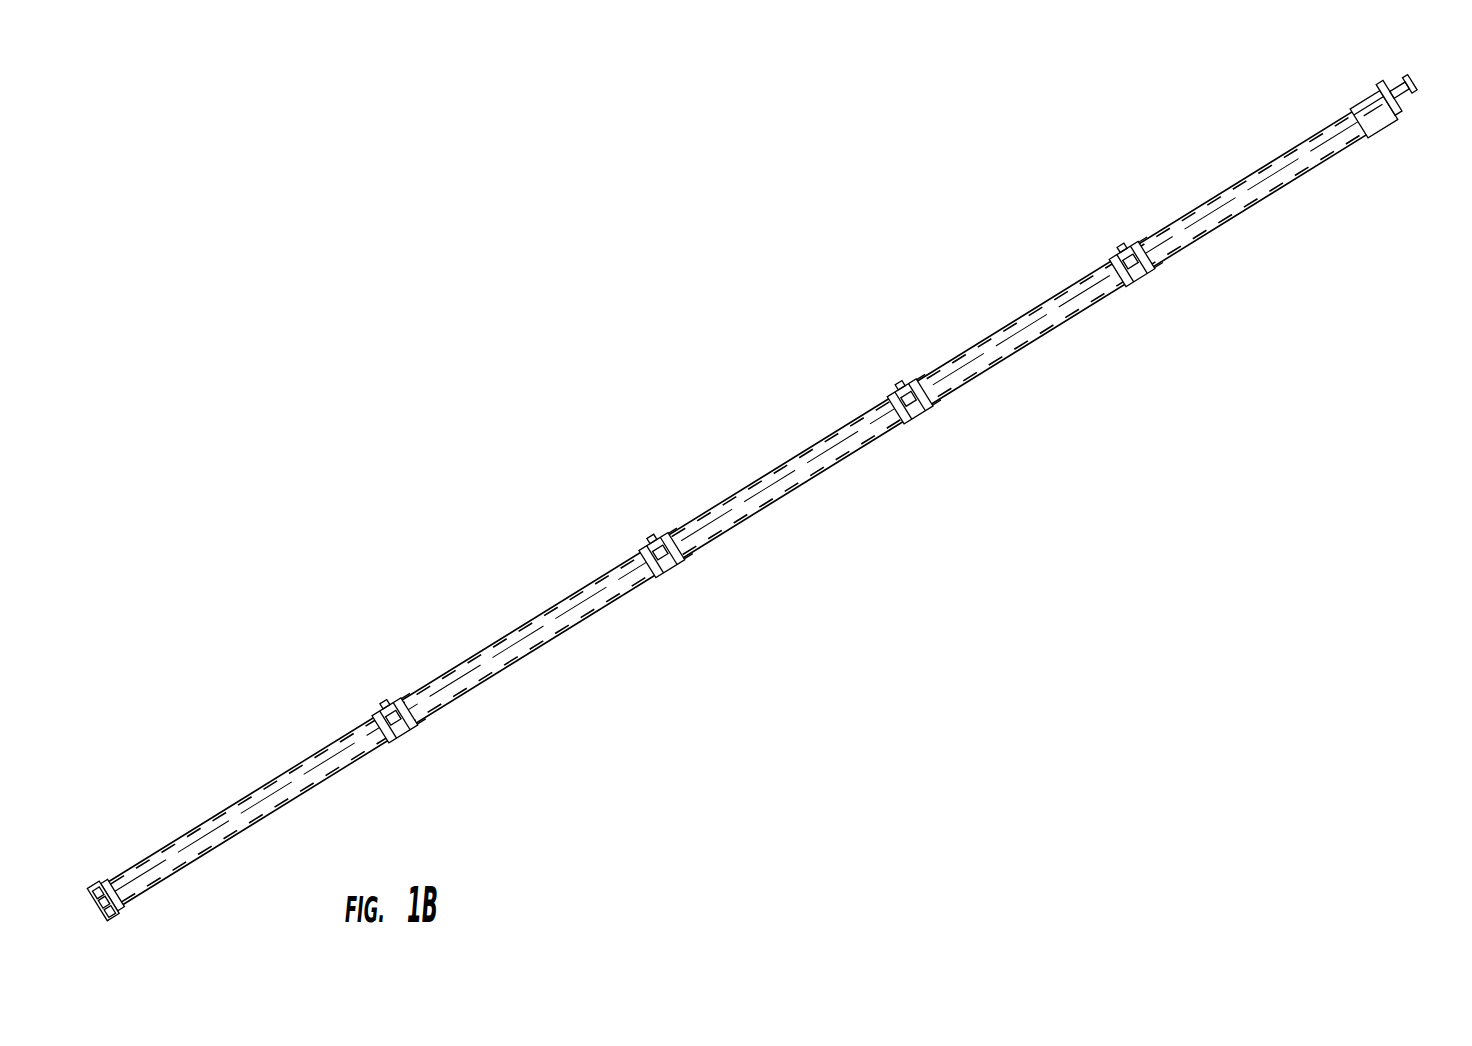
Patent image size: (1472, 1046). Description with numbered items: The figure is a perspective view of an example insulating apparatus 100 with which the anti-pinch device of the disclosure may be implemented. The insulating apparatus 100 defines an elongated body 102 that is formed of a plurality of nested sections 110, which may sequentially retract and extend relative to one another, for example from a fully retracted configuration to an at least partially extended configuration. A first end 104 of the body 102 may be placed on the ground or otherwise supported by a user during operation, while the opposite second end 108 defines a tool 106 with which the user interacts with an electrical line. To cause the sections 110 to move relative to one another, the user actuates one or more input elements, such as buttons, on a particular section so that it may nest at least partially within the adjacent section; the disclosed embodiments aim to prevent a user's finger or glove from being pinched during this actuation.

The insulating apparatus 100 is at (670, 272).
The body 102 is at (830, 594).
The first end 104 is at (96, 884).
The tool 106 is at (1418, 94).
The second end 108 is at (1350, 104).
The sections 110 is at (1190, 207).